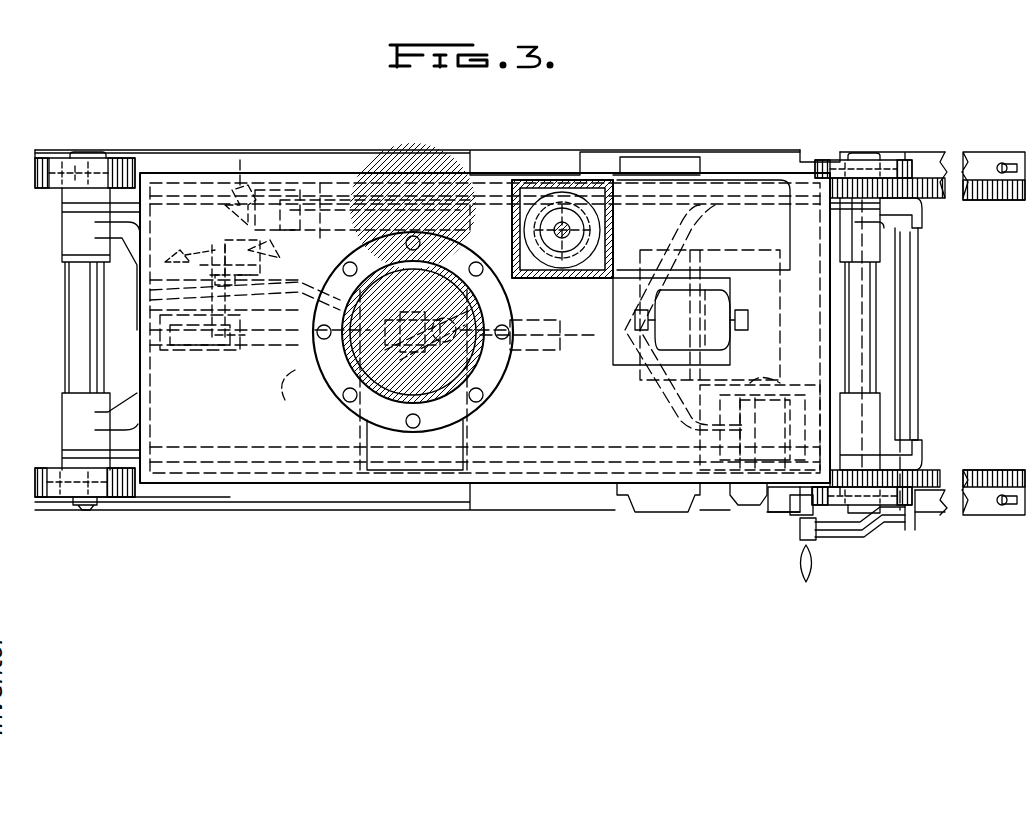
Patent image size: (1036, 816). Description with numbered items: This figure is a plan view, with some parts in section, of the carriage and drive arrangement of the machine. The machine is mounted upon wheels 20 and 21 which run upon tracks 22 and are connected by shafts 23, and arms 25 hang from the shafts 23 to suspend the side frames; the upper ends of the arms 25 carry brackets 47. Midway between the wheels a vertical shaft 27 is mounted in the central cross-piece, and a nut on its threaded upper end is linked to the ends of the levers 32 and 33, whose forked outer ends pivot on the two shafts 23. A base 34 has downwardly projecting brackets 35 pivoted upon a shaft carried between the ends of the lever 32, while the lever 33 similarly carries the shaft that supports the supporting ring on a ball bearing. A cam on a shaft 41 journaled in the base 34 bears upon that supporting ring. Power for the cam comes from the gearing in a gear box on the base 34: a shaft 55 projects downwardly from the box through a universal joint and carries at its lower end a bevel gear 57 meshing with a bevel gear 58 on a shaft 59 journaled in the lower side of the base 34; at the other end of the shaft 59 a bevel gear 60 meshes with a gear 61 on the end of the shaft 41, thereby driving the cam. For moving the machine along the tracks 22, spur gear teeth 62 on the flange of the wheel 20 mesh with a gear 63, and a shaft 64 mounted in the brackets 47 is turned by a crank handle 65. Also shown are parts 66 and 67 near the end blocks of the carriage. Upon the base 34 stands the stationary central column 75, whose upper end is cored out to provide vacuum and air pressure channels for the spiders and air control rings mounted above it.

The wheel 20 is at (893, 165).
The wheel 21 is at (125, 172).
The track 22 is at (200, 170).
The shaft 23 is at (92, 160).
The arm 25 is at (70, 197).
The vertical shaft 27 is at (445, 348).
The lever 32 is at (645, 404).
The lever 33 is at (295, 400).
The base 34 is at (352, 183).
The bracket 35 is at (780, 388).
The shaft 41 is at (222, 252).
The bracket 47 is at (920, 218).
The shaft 55 is at (570, 215).
The bevel gear 57 is at (578, 256).
The bevel gear 58 is at (548, 192).
The shaft 59 is at (328, 152).
The bevel gear 60 is at (240, 162).
The gear 61 is at (180, 263).
The spur gear teeth 62 is at (880, 535).
The gear 63 is at (918, 188).
The shaft 64 is at (910, 350).
The crank handle 65 is at (800, 568).
The end cap 66 is at (825, 152).
The clamp block 67 is at (1012, 162).
The stationary central column 75 is at (360, 301).